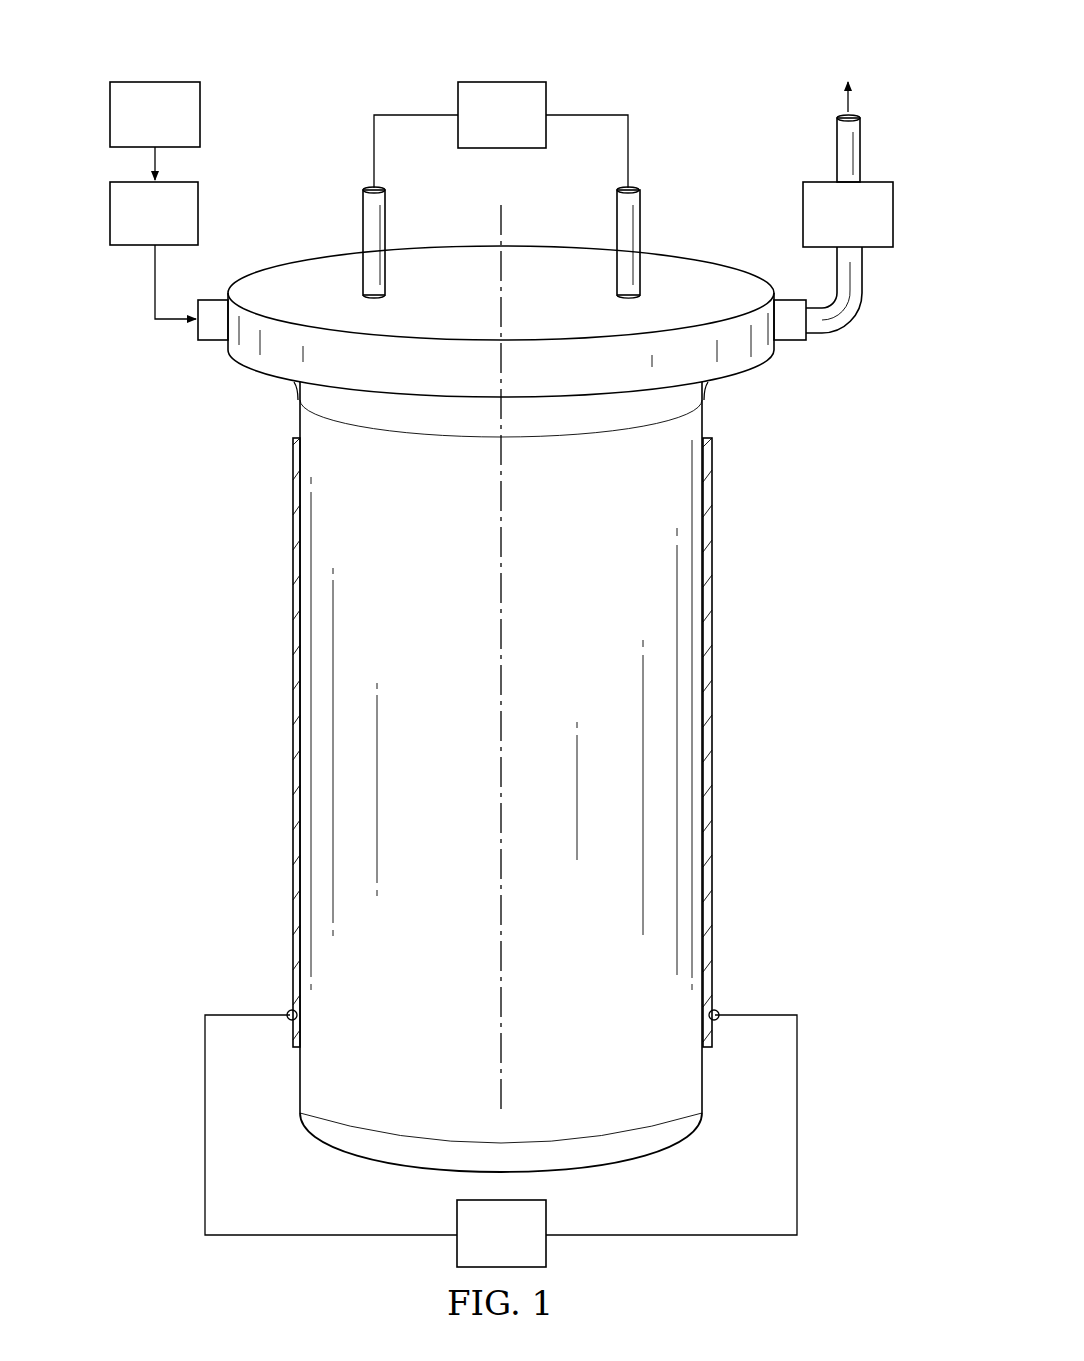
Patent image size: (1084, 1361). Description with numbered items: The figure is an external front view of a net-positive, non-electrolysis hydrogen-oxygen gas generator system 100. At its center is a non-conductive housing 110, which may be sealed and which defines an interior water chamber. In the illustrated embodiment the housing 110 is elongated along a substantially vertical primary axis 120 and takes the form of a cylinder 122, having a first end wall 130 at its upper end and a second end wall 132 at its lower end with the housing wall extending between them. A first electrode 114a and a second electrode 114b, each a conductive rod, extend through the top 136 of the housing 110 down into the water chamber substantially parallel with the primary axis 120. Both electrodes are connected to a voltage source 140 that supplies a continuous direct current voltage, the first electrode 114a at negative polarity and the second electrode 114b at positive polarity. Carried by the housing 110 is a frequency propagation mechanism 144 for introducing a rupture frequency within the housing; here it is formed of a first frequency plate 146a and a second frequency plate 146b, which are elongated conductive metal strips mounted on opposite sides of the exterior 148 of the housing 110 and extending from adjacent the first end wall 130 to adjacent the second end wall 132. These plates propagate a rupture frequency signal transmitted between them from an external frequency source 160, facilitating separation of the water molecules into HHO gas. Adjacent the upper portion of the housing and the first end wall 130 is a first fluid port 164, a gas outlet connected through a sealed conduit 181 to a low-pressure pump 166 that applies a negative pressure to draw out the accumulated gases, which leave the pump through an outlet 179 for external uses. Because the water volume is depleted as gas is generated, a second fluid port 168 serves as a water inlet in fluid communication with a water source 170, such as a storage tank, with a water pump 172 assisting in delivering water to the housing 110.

The hydrogen-oxygen gas generator system 100 is at (260, 62).
The housing 110 is at (752, 542).
The first electrode 114a is at (362, 208).
The second electrode 114b is at (641, 222).
The primary axis 120 is at (500, 1008).
The cylinder 122 is at (706, 1082).
The first end wall 130 is at (278, 392).
The second end wall 132 is at (600, 1174).
The top 136 is at (278, 264).
The voltage source 140 is at (482, 82).
The frequency propagation mechanism 144 is at (291, 899).
The first frequency plate 146a is at (292, 792).
The second frequency plate 146b is at (713, 806).
The exterior 148 is at (298, 1085).
The external frequency source 160 is at (457, 1224).
The first fluid port 164 is at (788, 342).
The low-pressure pump 166 is at (893, 214).
The second fluid port 168 is at (210, 342).
The water source 170 is at (110, 112).
The water pump 172 is at (110, 212).
The outlet 179 is at (862, 152).
The sealed conduit 181 is at (863, 292).